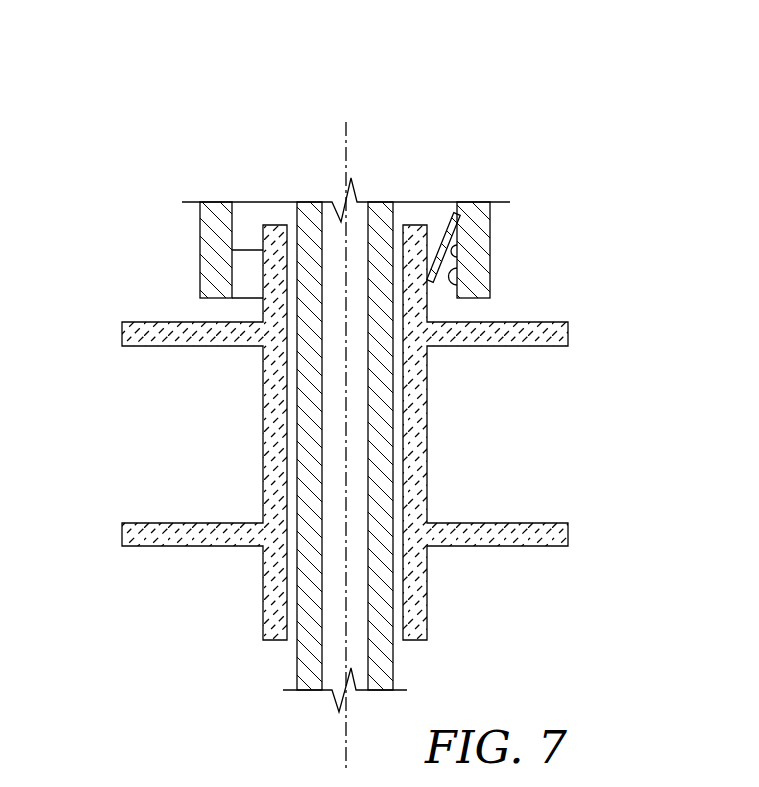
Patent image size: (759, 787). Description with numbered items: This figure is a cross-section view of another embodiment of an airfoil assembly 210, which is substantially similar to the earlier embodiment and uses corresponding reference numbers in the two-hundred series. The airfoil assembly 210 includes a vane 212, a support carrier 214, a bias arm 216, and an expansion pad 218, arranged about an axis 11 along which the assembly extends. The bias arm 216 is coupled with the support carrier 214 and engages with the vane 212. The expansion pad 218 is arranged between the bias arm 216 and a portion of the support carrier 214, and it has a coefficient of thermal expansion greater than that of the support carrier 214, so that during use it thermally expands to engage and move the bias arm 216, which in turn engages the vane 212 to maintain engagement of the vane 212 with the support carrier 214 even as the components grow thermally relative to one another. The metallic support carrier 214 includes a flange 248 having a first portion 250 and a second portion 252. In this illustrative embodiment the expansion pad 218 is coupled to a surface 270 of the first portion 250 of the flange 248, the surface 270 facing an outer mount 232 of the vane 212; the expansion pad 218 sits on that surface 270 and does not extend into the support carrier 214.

The airfoil assembly 210 is at (114, 152).
The axis 11 is at (349, 130).
The vane 212 is at (526, 432).
The support carrier 214 is at (569, 131).
The bias arm 216 is at (447, 228).
The expansion pad 218 is at (456, 247).
The outer mount 232 is at (279, 221).
The flange 248 is at (569, 214).
The first portion 250 is at (496, 260).
The second portion 252 is at (194, 244).
The surface 270 is at (466, 289).